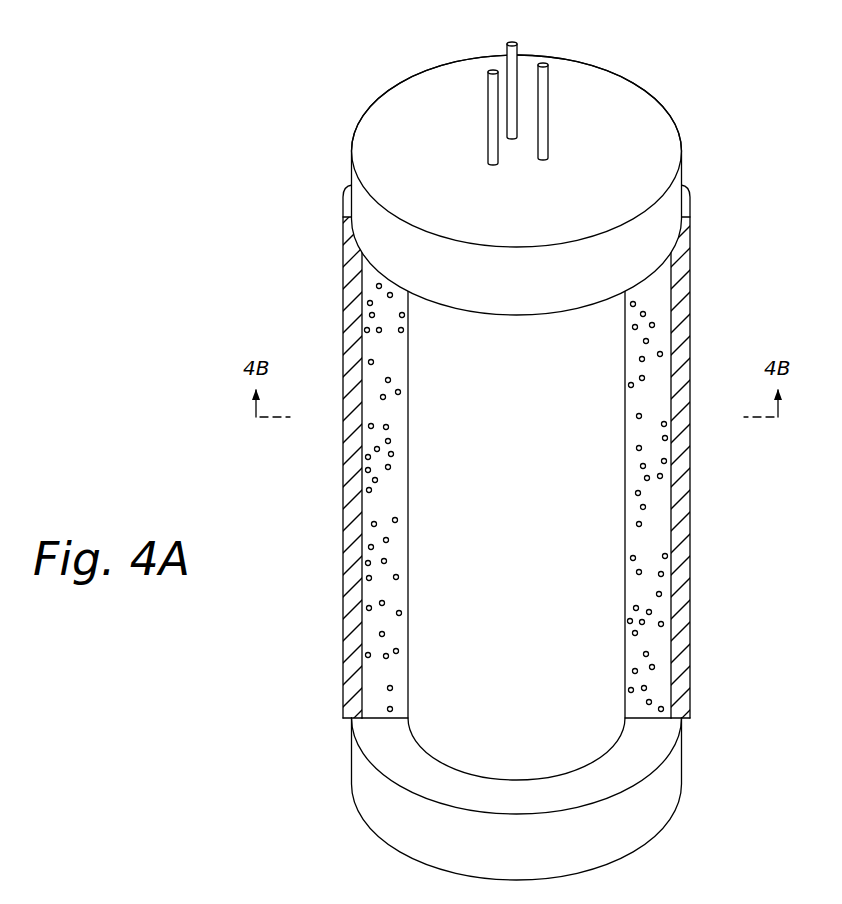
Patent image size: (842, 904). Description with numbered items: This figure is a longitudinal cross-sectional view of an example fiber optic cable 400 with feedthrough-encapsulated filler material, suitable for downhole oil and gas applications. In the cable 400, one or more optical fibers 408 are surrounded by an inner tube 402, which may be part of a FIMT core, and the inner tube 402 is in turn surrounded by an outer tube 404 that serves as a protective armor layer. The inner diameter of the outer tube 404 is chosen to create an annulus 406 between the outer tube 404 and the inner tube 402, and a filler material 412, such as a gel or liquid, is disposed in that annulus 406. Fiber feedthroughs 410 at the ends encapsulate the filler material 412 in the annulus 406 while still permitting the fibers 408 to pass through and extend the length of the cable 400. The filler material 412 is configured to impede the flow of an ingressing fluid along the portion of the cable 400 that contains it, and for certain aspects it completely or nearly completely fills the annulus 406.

The fiber optic cable 400 is at (263, 75).
The inner tube 402 is at (408, 575).
The outer tube 404 is at (343, 495).
The annulus 406 is at (653, 644).
The optical fibers 408 is at (513, 42).
The fiber feedthroughs 410 is at (408, 148).
The filler material 412 is at (382, 645).